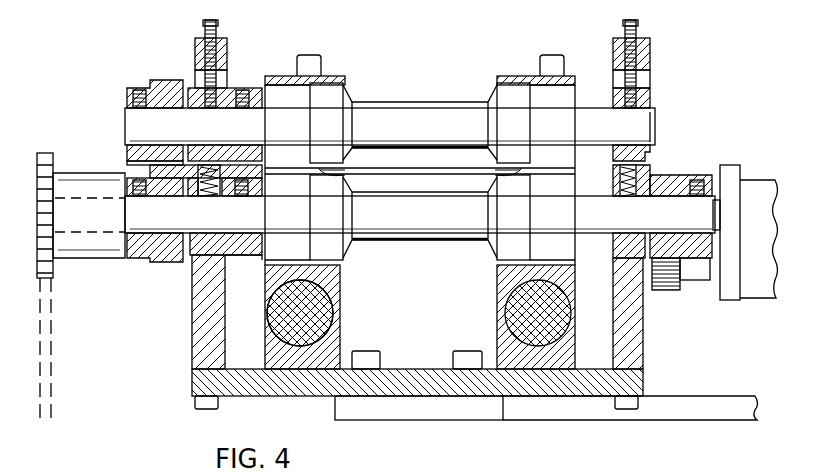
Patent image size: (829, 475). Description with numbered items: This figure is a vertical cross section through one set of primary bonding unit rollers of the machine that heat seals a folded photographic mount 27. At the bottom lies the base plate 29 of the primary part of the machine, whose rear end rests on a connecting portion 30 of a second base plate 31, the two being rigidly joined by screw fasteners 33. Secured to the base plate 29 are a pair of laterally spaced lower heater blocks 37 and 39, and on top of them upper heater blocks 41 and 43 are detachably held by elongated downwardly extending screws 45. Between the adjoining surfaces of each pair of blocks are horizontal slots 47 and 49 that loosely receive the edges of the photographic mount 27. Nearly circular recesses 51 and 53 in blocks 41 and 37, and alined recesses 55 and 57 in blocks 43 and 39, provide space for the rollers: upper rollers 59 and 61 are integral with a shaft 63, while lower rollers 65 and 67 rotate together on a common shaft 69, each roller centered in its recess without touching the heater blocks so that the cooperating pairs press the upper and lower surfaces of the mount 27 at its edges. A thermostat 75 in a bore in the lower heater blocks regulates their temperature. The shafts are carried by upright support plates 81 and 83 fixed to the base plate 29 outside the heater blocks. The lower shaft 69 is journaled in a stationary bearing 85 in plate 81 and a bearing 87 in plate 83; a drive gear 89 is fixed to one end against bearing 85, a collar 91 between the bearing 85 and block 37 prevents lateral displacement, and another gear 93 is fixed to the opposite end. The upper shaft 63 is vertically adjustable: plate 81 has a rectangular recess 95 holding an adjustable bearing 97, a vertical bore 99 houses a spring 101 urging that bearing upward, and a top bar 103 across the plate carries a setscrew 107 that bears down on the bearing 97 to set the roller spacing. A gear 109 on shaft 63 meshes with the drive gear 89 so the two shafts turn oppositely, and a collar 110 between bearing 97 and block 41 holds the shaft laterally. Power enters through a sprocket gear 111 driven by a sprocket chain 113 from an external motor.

The folded photographic mount 27 is at (385, 170).
The base plate 29 is at (406, 372).
The connecting portion 30 is at (470, 418).
The base plate 31 is at (670, 418).
The screw fasteners 33 is at (462, 351).
The lower heater block 37 is at (340, 278).
The lower heater block 39 is at (497, 280).
The upper heater block 41 is at (345, 78).
The upper heater block 43 is at (497, 78).
The screws 45 is at (322, 62).
The slot 47 is at (320, 176).
The slot 49 is at (520, 176).
The recess 51 is at (287, 175).
The recess 53 is at (287, 252).
The recess 55 is at (552, 175).
The recess 57 is at (552, 252).
The roller 59 is at (326, 123).
The roller 61 is at (513, 123).
The shaft 63 is at (390, 126).
The roller 65 is at (326, 217).
The roller 67 is at (513, 217).
The shaft 69 is at (422, 214).
The thermostat 75 is at (333, 314).
The support plate 81 is at (192, 316).
The support plate 83 is at (643, 338).
The bearing 85 is at (209, 247).
The bearing 87 is at (630, 243).
The drive gear 89 is at (145, 258).
The collar 91 is at (245, 257).
The gear 93 is at (680, 282).
The recess 95 is at (196, 78).
The adjustable bearing 97 is at (224, 92).
The vertical bore 99 is at (220, 196).
The spring 101 is at (203, 198).
The top bar 103 is at (222, 50).
The setscrew 107 is at (213, 22).
The gear 109 is at (160, 80).
The collar 110 is at (250, 88).
The sprocket gear 111 is at (54, 272).
The sprocket chain 113 is at (51, 360).